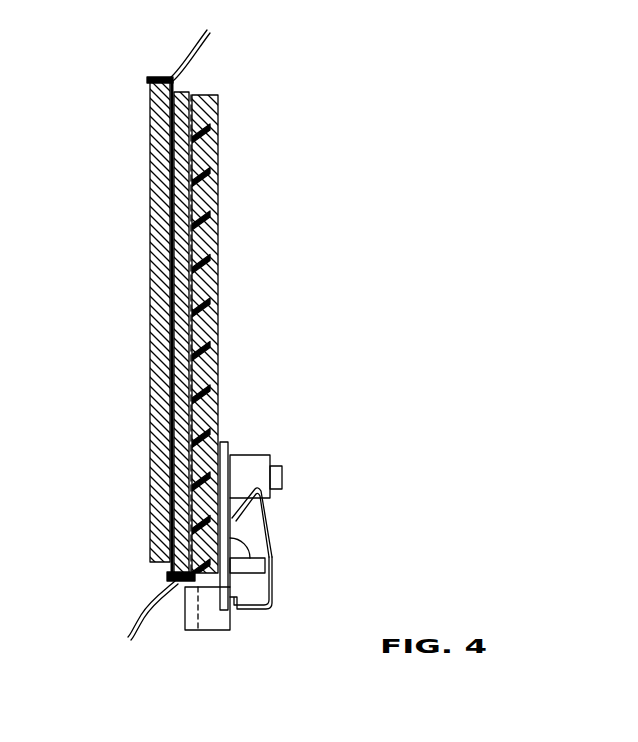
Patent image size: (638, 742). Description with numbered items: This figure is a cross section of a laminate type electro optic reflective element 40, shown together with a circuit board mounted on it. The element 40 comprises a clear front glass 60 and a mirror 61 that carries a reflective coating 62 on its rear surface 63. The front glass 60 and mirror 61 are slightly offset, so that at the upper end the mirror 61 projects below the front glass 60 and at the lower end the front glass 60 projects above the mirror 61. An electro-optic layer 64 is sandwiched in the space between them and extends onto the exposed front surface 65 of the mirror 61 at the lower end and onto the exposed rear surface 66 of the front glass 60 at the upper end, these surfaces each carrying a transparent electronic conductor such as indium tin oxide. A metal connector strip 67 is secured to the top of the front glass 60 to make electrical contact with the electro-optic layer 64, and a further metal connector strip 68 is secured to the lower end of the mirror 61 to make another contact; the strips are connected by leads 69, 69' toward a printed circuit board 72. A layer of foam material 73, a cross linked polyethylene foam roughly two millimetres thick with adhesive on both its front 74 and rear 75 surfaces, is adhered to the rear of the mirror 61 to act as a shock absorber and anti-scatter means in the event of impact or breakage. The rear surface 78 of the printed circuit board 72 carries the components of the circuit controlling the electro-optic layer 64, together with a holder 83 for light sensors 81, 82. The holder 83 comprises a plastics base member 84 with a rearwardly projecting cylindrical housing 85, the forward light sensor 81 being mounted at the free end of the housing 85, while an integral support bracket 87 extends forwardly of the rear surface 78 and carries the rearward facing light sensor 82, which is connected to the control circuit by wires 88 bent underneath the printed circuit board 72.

The electro optic reflective element 40 is at (128, 112).
The front glass 60 is at (165, 225).
The mirror 61 is at (168, 332).
The reflective coating 62 is at (213, 172).
The rear surface 63 is at (172, 258).
The electro-optic layer 64 is at (165, 300).
The front surface 65 is at (165, 563).
The rear surface 66 is at (173, 90).
The metal connector strip 67 is at (153, 77).
The metal connector strip 68 is at (177, 592).
The lead 69 is at (198, 55).
The lead 69' is at (142, 608).
The printed circuit board 72 is at (220, 310).
The layer of foam material 73 is at (202, 228).
The front surface 74 is at (170, 378).
The rear surface 75 is at (218, 270).
The rear surface 78 is at (222, 358).
The light sensor 81 is at (282, 482).
The light sensor 82 is at (193, 627).
The holder 83 is at (222, 527).
The base member 84 is at (222, 450).
The cylindrical housing 85 is at (255, 463).
The support bracket 87 is at (235, 605).
The wires 88 is at (268, 600).